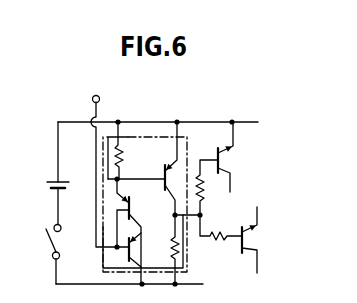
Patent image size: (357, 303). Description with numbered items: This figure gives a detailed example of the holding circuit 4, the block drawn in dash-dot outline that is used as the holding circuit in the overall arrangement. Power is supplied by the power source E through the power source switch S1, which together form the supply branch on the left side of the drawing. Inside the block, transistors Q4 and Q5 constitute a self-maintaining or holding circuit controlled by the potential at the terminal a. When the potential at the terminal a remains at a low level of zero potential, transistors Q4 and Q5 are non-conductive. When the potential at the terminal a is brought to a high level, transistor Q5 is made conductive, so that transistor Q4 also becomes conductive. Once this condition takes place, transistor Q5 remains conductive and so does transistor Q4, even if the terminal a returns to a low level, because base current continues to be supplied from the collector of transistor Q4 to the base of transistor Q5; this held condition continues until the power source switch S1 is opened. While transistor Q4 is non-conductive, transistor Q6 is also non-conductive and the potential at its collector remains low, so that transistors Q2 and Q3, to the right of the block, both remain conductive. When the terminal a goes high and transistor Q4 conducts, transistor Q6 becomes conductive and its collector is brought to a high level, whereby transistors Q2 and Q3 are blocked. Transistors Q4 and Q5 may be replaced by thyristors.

The holding circuit 4 is at (186, 156).
The transistor Q2 is at (221, 160).
The transistor Q3 is at (253, 246).
The transistor Q4 is at (144, 231).
The transistor Q5 is at (143, 250).
The transistor Q6 is at (163, 170).
The power source E is at (50, 179).
The power source switch S1 is at (45, 252).
The terminal a is at (96, 95).